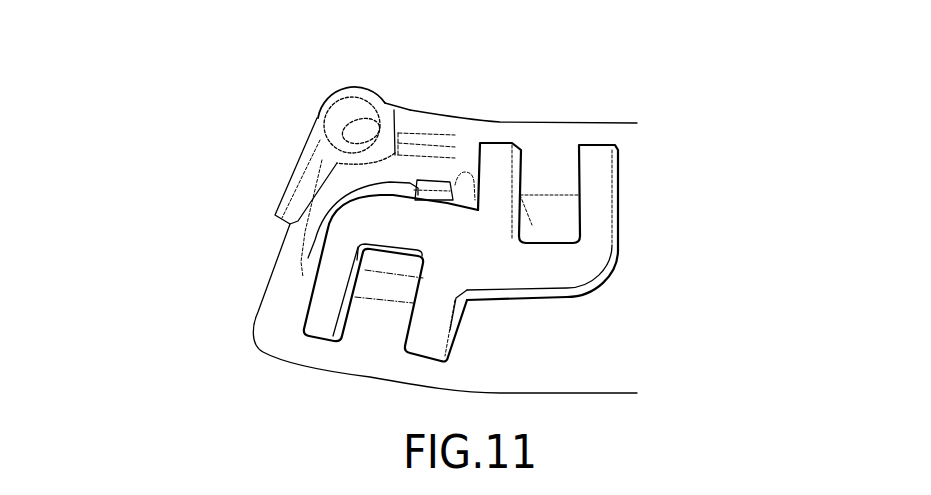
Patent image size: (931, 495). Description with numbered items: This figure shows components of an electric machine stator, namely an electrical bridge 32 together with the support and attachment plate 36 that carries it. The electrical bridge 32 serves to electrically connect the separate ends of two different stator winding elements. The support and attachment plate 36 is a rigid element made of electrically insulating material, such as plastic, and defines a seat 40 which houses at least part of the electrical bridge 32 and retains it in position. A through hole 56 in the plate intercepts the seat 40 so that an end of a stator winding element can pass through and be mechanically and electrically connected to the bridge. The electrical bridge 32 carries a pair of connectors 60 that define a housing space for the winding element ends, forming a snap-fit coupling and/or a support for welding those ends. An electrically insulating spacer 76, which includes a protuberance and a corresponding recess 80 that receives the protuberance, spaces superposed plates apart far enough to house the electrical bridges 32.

The electrically insulating spacer 76 is at (318, 112).
The recess 80 is at (353, 125).
The electrical bridge 32 is at (448, 238).
The support and attachment plate 36 is at (627, 133).
The seat 40 is at (303, 240).
The through hole 56 is at (562, 232).
The connector 60 is at (500, 160).